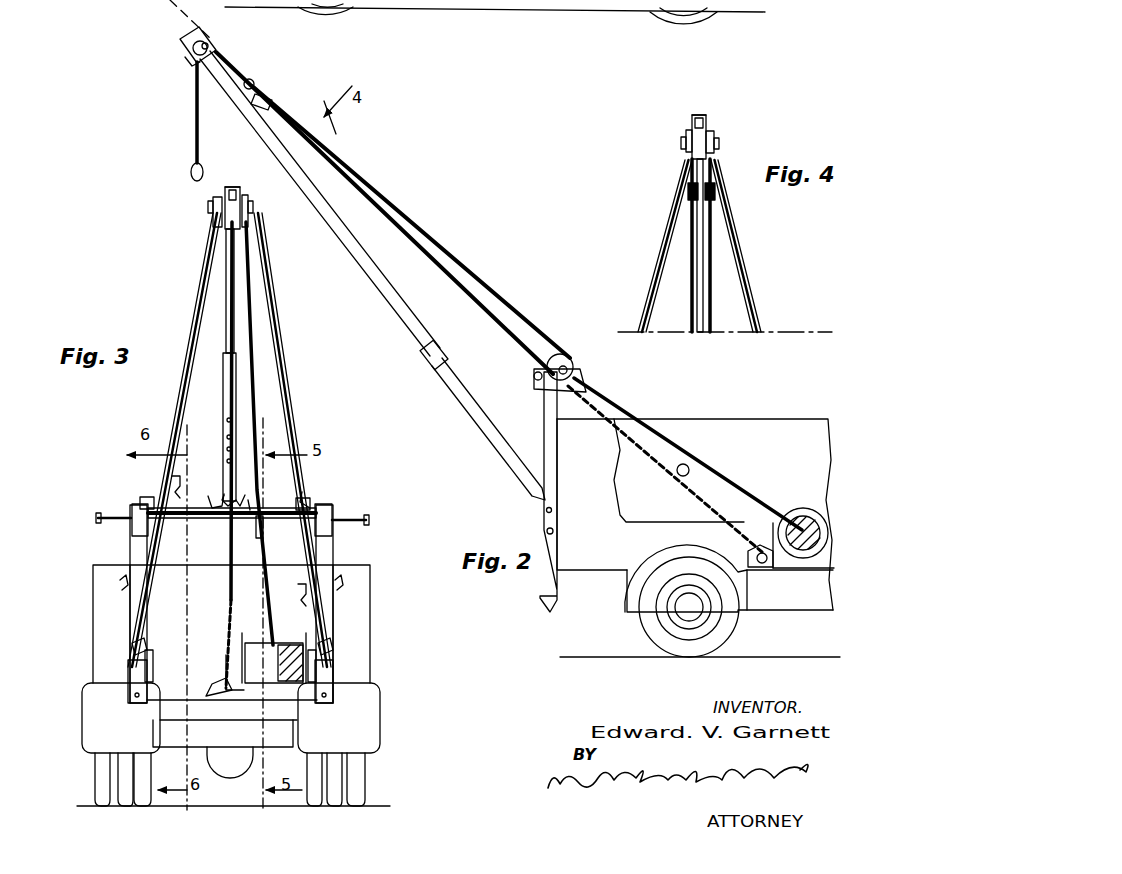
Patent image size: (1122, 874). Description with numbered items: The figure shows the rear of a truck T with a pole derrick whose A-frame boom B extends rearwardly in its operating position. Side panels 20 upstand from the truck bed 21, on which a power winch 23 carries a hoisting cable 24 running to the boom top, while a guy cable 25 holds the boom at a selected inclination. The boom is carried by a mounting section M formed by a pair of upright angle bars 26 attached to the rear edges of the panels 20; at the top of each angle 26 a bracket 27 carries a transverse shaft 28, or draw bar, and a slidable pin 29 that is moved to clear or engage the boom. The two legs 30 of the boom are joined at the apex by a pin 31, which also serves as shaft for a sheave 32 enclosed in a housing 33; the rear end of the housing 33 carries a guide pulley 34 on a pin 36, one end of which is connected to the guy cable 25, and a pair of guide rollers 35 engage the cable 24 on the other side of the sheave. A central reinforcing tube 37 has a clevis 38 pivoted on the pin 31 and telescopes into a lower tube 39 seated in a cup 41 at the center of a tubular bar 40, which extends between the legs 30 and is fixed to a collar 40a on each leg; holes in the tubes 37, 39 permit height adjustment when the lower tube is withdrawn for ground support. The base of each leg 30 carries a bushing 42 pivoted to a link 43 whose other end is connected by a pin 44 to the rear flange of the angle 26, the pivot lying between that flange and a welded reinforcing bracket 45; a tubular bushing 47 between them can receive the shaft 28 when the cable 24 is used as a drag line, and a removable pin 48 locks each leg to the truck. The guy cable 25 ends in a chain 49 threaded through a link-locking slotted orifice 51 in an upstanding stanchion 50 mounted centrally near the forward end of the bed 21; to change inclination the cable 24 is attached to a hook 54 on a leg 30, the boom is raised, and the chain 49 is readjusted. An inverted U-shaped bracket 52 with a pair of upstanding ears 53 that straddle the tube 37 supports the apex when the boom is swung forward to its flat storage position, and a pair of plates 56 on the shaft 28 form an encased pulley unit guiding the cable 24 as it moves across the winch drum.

In FIG. 2, the side panels 20 is at (695, 515).
In FIG. 3, the side panels 20 is at (93, 590).
In FIG. 3, the bed 21 is at (177, 711).
In FIG. 2, the power winch 23 is at (812, 512).
In FIG. 3, the power winch 23 is at (271, 670).
In FIG. 2, the hoisting cable 24 is at (195, 124).
In FIG. 3, the hoisting cable 24 is at (252, 284).
In FIG. 4, the hoisting cable 24 is at (690, 316).
In FIG. 2, the guy cable 25 is at (519, 313).
In FIG. 3, the guy cable 25 is at (229, 553).
In FIG. 4, the guy cable 25 is at (712, 316).
In FIG. 2, the upright angle bars 26 is at (544, 405).
In FIG. 3, the upright angle bars 26 is at (130, 549).
In FIG. 2, the bracket 27 is at (582, 378).
In FIG. 3, the bracket 27 is at (132, 506).
In FIG. 2, the transverse shaft 28 is at (560, 354).
In FIG. 3, the transverse shaft 28 is at (146, 497).
In FIG. 2, the pin 29 is at (534, 376).
In FIG. 3, the pin 29 is at (96, 517).
In FIG. 2, the legs 30 is at (336, 232).
In FIG. 3, the legs 30 is at (190, 338).
In FIG. 4, the legs 30 is at (658, 260).
In FIG. 2, the pin 31 is at (208, 48).
In FIG. 3, the pin 31 is at (208, 206).
In FIG. 4, the pin 31 is at (681, 142).
In FIG. 3, the sheave 32 is at (241, 194).
In FIG. 4, the sheave 32 is at (706, 125).
In FIG. 2, the housing 33 is at (181, 42).
In FIG. 3, the housing 33 is at (237, 185).
In FIG. 4, the housing 33 is at (697, 113).
In FIG. 2, the guide pulley 34 is at (264, 98).
In FIG. 4, the guide pulley 34 is at (688, 191).
In FIG. 2, the guide rollers 35 is at (188, 63).
In FIG. 3, the guide rollers 35 is at (253, 214).
In FIG. 2, the pin 36 is at (250, 79).
In FIG. 4, the pin 36 is at (715, 187).
In FIG. 3, the tube 37 is at (226, 265).
In FIG. 4, the tube 37 is at (697, 290).
In FIG. 3, the clevis 38 is at (249, 201).
In FIG. 4, the clevis 38 is at (715, 136).
In FIG. 3, the lower tube 39 is at (229, 411).
In FIG. 2, the tubular bar 40 is at (488, 429).
In FIG. 3, the tubular bar 40 is at (243, 521).
In FIG. 2, the collar 40a is at (438, 370).
In FIG. 3, the collar 40a is at (304, 490).
In FIG. 2, the cup 41 is at (424, 359).
In FIG. 3, the cup 41 is at (226, 494).
In FIG. 3, the bushing 42 is at (143, 649).
In FIG. 3, the link 43 is at (131, 612).
In FIG. 2, the pin 44 is at (553, 431).
In FIG. 3, the pin 44 is at (232, 592).
In FIG. 3, the reinforcing bracket 45 is at (150, 673).
In FIG. 2, the tubular bushing 47 is at (555, 533).
In FIG. 3, the removable pin 48 is at (150, 662).
In FIG. 2, the chain 49 is at (697, 488).
In FIG. 3, the chain 49 is at (229, 617).
In FIG. 2, the stanchion 50 is at (772, 568).
In FIG. 3, the stanchion 50 is at (215, 684).
In FIG. 2, the slotted orifice 51 is at (768, 553).
In FIG. 3, the inverted U-shaped bracket 52 is at (312, 500).
In FIG. 3, the ears 53 is at (247, 500).
In FIG. 3, the hook 54 is at (172, 479).
In FIG. 2, the plates 56 is at (573, 367).
In FIG. 3, the plates 56 is at (264, 535).
In FIG. 2, the boom B is at (368, 284).
In FIG. 2, the mounting section M is at (560, 463).
In FIG. 3, the mounting section M is at (127, 629).
In FIG. 2, the truck T is at (746, 418).
In FIG. 3, the truck T is at (90, 643).